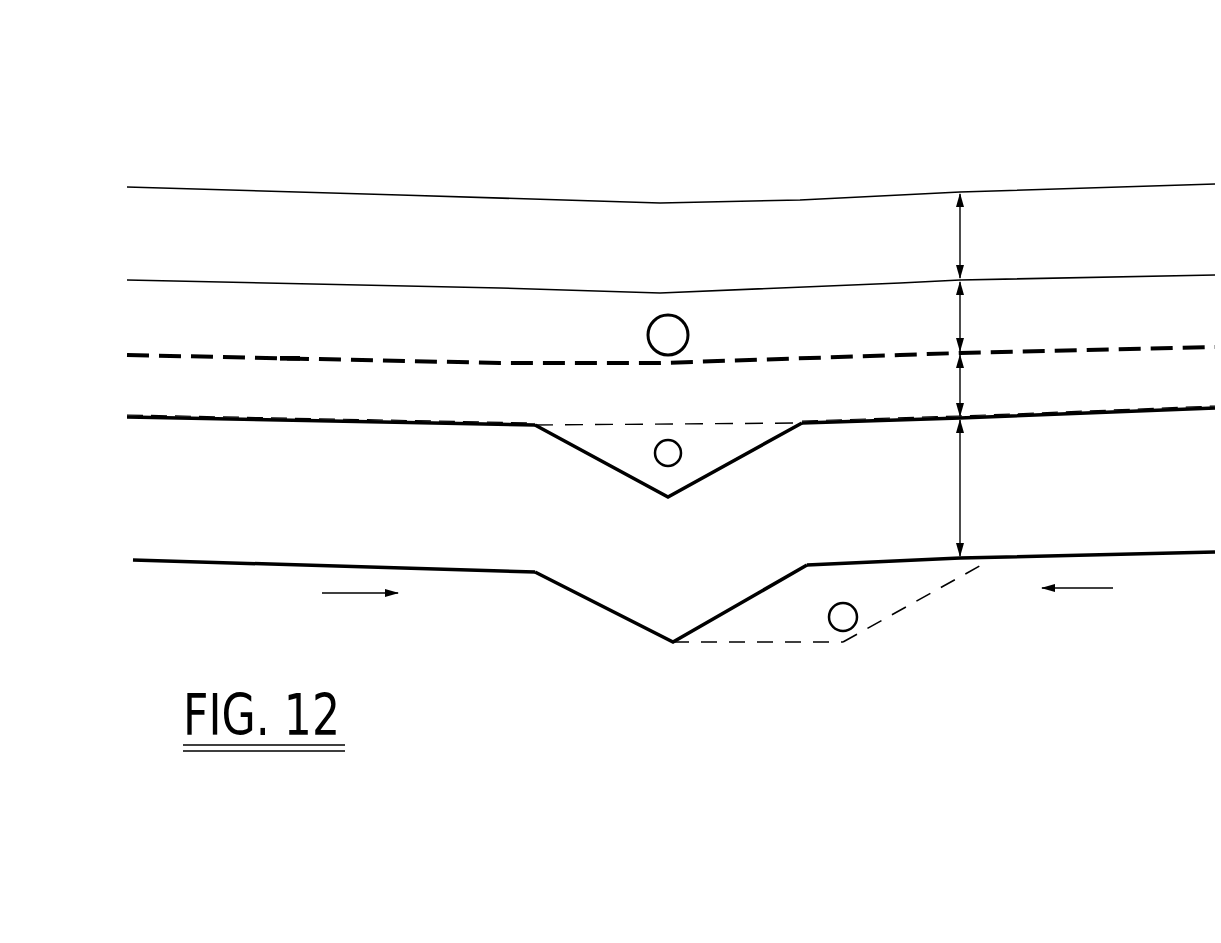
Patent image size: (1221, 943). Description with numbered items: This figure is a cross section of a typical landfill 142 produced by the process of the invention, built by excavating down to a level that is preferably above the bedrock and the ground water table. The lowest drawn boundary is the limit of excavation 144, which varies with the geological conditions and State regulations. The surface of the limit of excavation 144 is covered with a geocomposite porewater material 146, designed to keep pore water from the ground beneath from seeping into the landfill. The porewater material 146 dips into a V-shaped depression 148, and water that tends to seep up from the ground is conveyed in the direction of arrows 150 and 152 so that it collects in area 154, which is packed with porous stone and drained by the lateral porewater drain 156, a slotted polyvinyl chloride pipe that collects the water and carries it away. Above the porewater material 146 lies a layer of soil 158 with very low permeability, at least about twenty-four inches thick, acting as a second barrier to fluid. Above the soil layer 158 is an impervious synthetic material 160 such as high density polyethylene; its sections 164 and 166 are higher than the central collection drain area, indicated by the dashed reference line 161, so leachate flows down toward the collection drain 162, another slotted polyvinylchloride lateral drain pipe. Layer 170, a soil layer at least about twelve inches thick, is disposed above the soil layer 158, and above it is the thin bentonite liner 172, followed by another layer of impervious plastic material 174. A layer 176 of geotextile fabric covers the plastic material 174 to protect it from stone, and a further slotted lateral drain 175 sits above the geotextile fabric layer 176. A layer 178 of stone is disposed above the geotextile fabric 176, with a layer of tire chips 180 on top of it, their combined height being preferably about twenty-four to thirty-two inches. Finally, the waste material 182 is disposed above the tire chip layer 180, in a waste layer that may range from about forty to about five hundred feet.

The landfill 142 is at (941, 152).
The limit of excavation 144 is at (1000, 566).
The geocomposite porewater material 146 is at (260, 569).
The V-shaped groove in lower surface 148 is at (653, 618).
The arrow 150 is at (362, 596).
The arrow 152 is at (1080, 590).
The area 154 is at (778, 620).
The lateral porewater drain 156 is at (856, 632).
The layer of soil 158 is at (962, 486).
The impervious synthetic material 160 is at (320, 423).
The reference line across groove 161 is at (610, 441).
The collection drain 162 is at (660, 465).
The section 164 is at (418, 388).
The section 166 is at (1100, 418).
The layer 170 is at (962, 380).
The bentonite liner 172 is at (290, 359).
The impervious plastic material 174 is at (290, 354).
The lateral drain 175 is at (688, 332).
The layer of geotextile fabric 176 is at (291, 352).
The layer of stone 178 is at (962, 312).
The layer of tire chips 180 is at (962, 238).
The waste material 182 is at (713, 150).